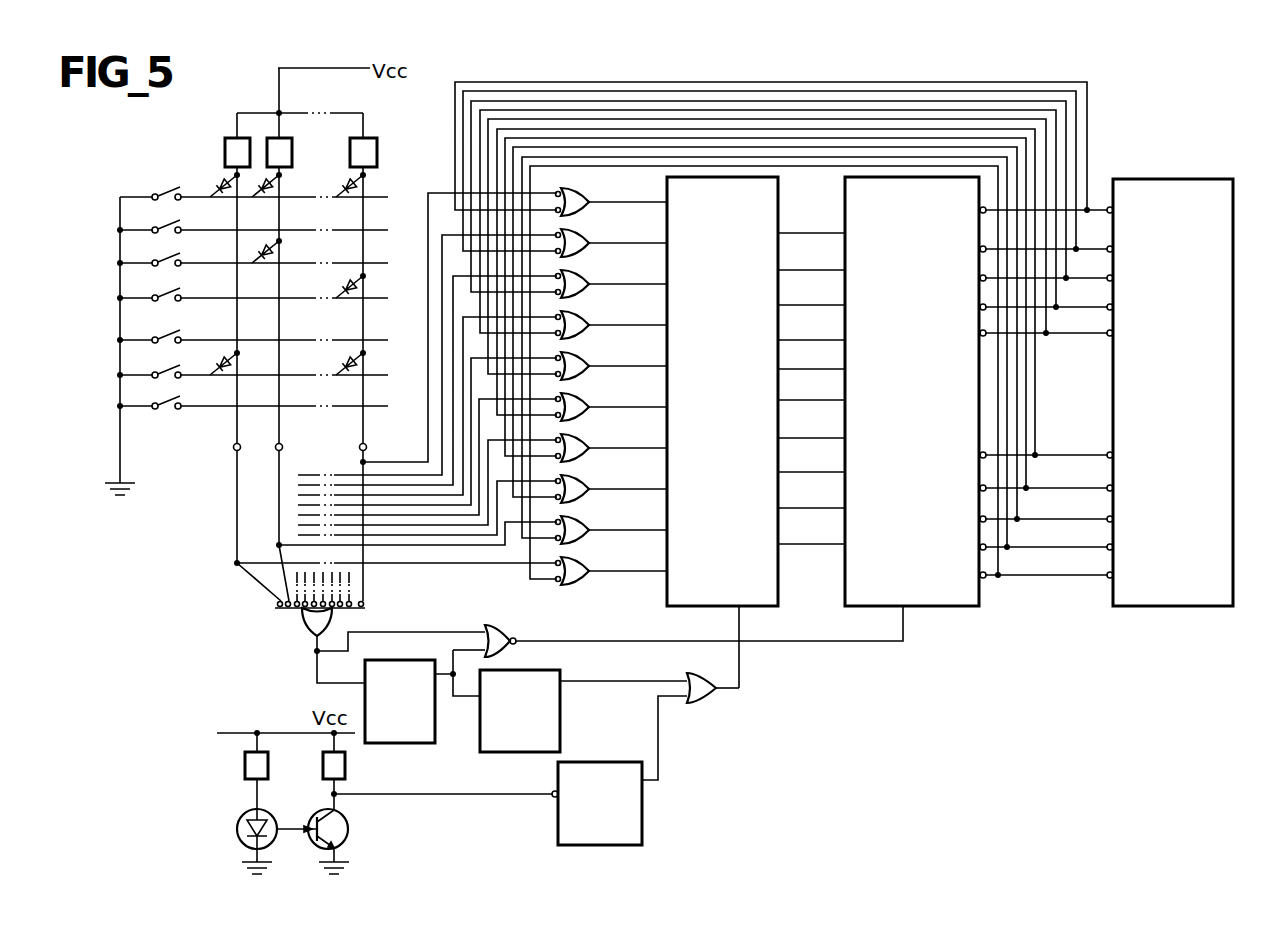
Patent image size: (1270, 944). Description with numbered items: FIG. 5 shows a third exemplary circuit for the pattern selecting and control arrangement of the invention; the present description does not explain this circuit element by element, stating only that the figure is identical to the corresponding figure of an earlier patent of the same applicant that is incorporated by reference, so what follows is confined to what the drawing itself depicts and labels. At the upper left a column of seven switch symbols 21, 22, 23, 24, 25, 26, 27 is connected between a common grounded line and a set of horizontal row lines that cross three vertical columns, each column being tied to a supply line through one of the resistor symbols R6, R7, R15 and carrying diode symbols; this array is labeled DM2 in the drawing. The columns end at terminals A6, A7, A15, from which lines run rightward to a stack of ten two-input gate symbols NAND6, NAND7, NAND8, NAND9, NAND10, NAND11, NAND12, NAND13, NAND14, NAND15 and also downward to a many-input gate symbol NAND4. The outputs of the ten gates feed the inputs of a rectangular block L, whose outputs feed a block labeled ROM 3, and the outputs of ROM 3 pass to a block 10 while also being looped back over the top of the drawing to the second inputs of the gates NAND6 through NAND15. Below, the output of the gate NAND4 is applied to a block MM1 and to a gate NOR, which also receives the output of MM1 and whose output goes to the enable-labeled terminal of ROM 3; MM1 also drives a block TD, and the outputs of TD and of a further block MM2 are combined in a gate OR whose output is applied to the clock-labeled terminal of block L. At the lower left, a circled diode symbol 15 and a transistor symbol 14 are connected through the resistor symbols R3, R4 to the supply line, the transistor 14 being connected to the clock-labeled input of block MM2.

The display unit 10 is at (1170, 392).
The read only memory ROM 3 is at (811, 409).
The transistor 14 is at (348, 821).
The photodiode 15 is at (238, 818).
The switch 21 is at (254, 185).
The switch 22 is at (254, 218).
The switch 23 is at (254, 251).
The switch 24 is at (254, 286).
The switch 25 is at (254, 328).
The switch 26 is at (254, 363).
The switch 27 is at (254, 414).
The resistor R3 is at (240, 771).
The resistor R4 is at (348, 771).
The resistor R6 is at (220, 278).
The resistor R7 is at (294, 256).
The resistor R15 is at (384, 278).
The diode matrix DM2 is at (352, 113).
The address line terminal A6 is at (224, 493).
The address line terminal A7 is at (293, 484).
The address line terminal A15 is at (384, 512).
The NAND gate NAND4 is at (347, 614).
The NAND gate NAND6 is at (612, 560).
The NAND gate NAND7 is at (612, 519).
The NAND gate NAND8 is at (612, 478).
The NAND gate NAND9 is at (612, 437).
The NAND gate NAND10 is at (612, 396).
The NAND gate NAND11 is at (612, 355).
The NAND gate NAND12 is at (612, 314).
The NAND gate NAND13 is at (612, 273).
The NAND gate NAND14 is at (612, 232).
The NAND gate NAND15 is at (607, 191).
The latch circuit L is at (756, 432).
The NOR gate NOR is at (484, 630).
The OR gate OR is at (707, 676).
The monostable multivibrator MM1 is at (422, 696).
The monostable multivibrator MM2 is at (510, 770).
The time delay circuit TD is at (583, 711).